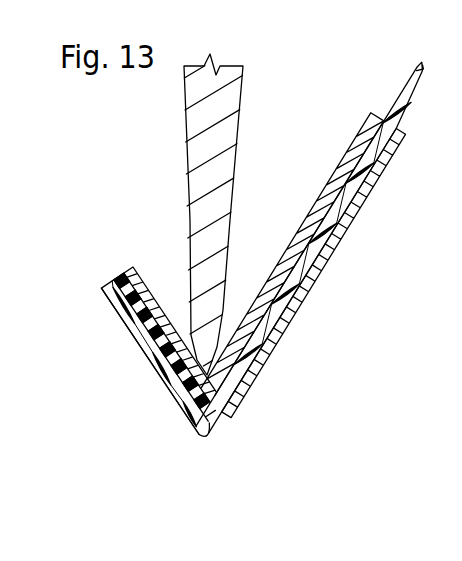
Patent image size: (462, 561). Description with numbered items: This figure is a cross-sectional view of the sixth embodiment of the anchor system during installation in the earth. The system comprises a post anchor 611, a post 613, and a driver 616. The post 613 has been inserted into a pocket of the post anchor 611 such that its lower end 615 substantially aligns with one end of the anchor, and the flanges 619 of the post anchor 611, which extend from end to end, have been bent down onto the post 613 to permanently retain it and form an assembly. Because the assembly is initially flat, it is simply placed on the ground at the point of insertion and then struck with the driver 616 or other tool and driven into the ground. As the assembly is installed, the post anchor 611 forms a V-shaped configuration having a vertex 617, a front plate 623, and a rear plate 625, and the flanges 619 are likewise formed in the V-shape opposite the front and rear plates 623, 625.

The post anchor 611 is at (134, 127).
The post 613 is at (403, 87).
The lower end 615 is at (116, 280).
The driver 616 is at (185, 158).
The vertex 617 is at (204, 437).
The flanges 619 is at (355, 138).
The front plate 623 is at (130, 338).
The rear plate 625 is at (302, 295).